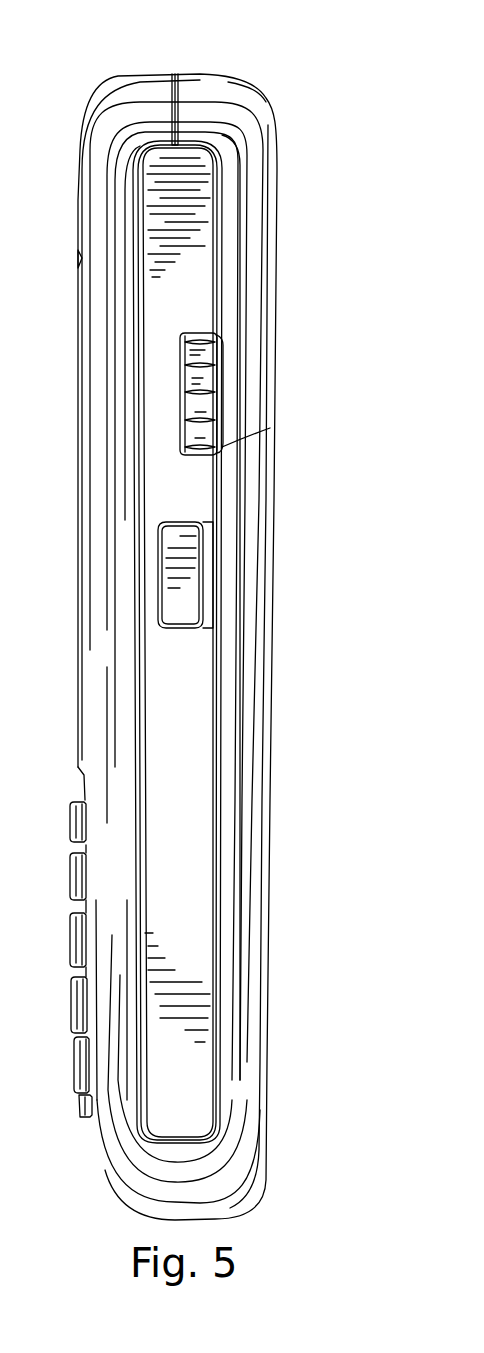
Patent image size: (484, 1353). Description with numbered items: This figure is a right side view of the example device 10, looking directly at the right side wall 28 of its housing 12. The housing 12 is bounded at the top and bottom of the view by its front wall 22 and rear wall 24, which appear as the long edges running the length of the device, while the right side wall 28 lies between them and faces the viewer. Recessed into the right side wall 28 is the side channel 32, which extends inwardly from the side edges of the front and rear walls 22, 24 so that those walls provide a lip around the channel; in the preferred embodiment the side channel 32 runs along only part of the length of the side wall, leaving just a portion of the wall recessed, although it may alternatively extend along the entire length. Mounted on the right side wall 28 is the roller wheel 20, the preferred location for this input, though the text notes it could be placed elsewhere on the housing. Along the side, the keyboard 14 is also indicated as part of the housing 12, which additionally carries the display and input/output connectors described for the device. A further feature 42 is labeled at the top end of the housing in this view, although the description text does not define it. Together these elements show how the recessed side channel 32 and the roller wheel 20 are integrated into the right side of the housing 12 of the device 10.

The device 10 is at (313, 114).
The housing 12 is at (208, 98).
The keyboard 14 is at (70, 873).
The roller wheel 20 is at (203, 378).
The front wall 22 is at (78, 200).
The rear wall 24 is at (272, 475).
The right side wall 28 is at (185, 804).
The side channel 32 is at (173, 303).
The top slot 42 is at (157, 73).